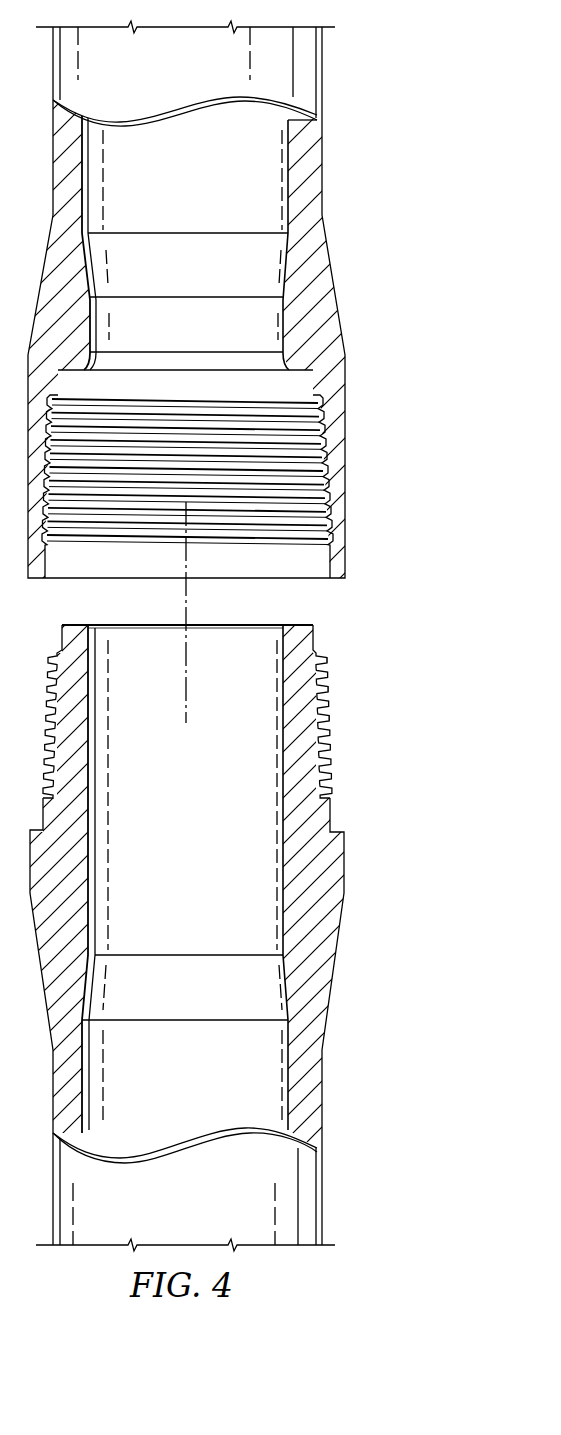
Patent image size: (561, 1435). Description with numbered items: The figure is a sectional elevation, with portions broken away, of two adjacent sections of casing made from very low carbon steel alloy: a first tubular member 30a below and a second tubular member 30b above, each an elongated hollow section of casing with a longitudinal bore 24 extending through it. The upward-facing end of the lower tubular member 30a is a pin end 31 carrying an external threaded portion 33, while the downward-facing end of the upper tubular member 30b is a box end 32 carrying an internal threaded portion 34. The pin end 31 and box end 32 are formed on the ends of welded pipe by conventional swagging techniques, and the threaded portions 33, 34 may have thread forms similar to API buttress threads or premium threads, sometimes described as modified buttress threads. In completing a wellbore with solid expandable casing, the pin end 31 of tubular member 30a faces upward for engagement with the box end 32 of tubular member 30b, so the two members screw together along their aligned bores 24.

The longitudinal bore 24 is at (175, 191).
The tubular member 30a is at (356, 1024).
The tubular member 30b is at (358, 238).
The pin end 31 is at (356, 740).
The box end 32 is at (345, 483).
The threaded portion 33 is at (324, 690).
The threaded portion 34 is at (53, 522).